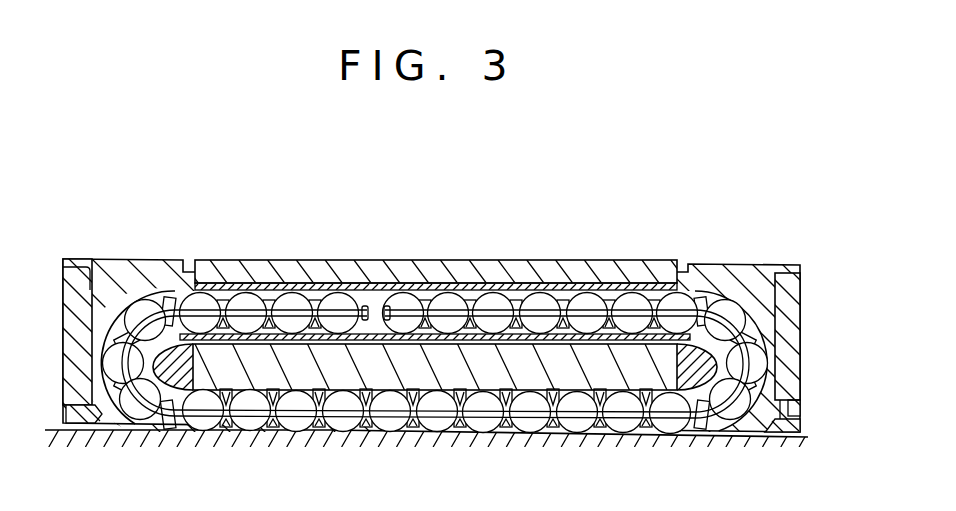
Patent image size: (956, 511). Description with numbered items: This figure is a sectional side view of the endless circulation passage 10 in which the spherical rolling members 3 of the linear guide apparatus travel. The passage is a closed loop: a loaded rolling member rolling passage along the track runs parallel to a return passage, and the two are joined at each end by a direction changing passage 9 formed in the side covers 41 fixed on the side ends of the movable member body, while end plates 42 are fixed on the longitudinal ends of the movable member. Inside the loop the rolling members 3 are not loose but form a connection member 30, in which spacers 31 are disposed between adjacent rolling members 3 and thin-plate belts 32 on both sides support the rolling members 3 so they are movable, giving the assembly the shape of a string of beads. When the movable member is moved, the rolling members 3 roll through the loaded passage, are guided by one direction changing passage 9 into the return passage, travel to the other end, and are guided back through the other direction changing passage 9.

The rolling member 3 is at (590, 300).
The direction changing passage 9 is at (110, 328).
The endless circulation passage 10 is at (372, 300).
The connection member 30 is at (435, 324).
The spacer 31 is at (563, 310).
The connecting belt 32 is at (687, 193).
The side cover 41 is at (140, 267).
The end plate 42 is at (84, 273).